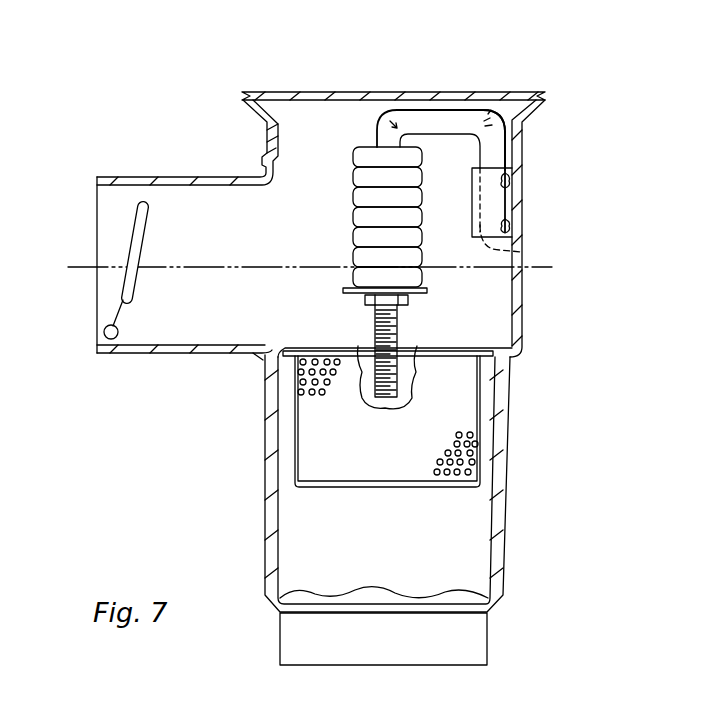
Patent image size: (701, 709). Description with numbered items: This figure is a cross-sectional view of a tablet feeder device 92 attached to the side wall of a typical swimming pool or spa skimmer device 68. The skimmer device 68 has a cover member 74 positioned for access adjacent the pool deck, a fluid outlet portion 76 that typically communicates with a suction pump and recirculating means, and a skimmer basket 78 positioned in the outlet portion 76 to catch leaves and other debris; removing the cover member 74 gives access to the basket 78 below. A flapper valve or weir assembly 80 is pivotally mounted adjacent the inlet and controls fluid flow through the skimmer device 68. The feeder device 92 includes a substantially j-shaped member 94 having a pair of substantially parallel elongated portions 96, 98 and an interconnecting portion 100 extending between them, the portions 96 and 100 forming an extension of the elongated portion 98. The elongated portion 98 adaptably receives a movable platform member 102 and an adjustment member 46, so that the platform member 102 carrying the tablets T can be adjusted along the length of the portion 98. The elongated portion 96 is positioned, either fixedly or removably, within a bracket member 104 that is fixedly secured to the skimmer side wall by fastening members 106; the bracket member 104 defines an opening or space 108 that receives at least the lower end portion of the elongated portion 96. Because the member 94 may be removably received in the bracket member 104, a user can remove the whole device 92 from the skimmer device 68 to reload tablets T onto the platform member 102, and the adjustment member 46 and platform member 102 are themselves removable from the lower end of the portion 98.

The skimmer device 68 is at (180, 124).
The cover member 74 is at (295, 91).
The fluid outlet portion 76 is at (508, 508).
The skimmer basket 78 is at (294, 436).
The flapper valve or weir assembly 80 is at (143, 244).
The tablet feeder device 92 is at (306, 205).
The j-shaped member 94 is at (502, 102).
The elongated portion 96 is at (495, 142).
The elongated portion 98 is at (398, 333).
The interconnecting portion 100 is at (413, 108).
The movable platform member 102 is at (430, 291).
The bracket member 104 is at (472, 196).
The fastening members 106 is at (522, 179).
The opening or space 108 is at (527, 256).
The adjustment member 46 is at (365, 300).
The tablets T is at (353, 238).